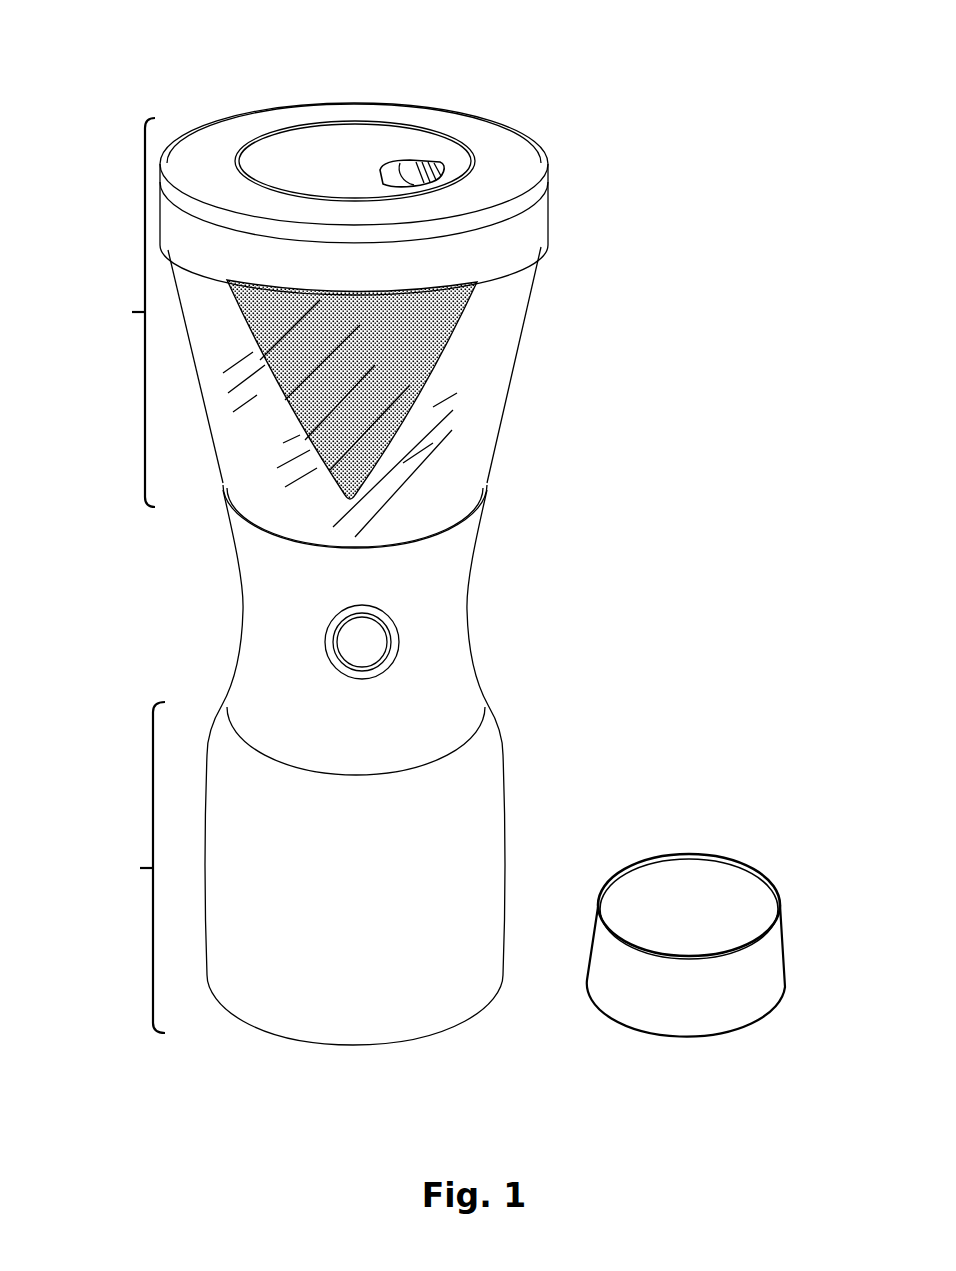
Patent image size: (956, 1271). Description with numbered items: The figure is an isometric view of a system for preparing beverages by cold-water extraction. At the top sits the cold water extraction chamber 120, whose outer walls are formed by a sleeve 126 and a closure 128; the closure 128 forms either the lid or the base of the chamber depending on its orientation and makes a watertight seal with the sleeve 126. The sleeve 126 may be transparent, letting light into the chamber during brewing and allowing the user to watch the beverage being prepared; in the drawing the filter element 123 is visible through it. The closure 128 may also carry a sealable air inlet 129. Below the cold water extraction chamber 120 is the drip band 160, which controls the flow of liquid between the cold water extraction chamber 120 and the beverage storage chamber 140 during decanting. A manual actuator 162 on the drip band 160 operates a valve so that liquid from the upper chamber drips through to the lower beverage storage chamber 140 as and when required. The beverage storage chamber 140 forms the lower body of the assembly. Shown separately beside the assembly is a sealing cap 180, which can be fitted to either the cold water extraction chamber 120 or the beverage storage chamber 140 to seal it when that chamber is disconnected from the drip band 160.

The cold water extraction chamber 120 is at (111, 312).
The filter 123 is at (400, 383).
The sleeve 126 is at (520, 313).
The closure 128 is at (535, 215).
The sealable air inlet 129 is at (432, 163).
The beverage storage chamber 140 is at (286, 873).
The drip band 160 is at (263, 660).
The manual actuator 162 is at (365, 638).
The sealing cap 180 is at (697, 898).